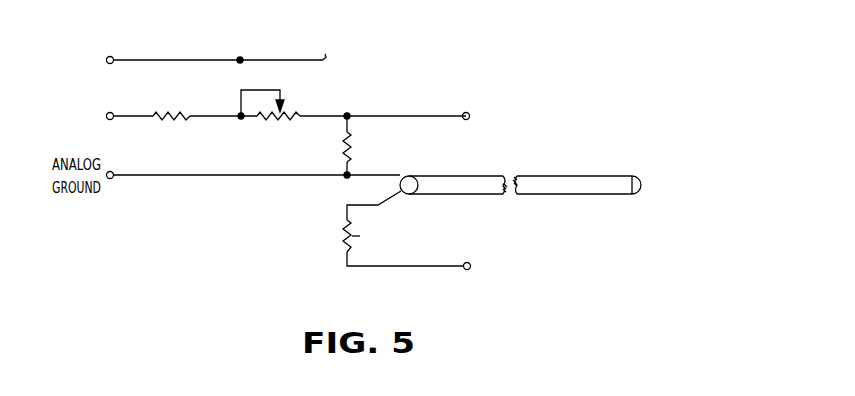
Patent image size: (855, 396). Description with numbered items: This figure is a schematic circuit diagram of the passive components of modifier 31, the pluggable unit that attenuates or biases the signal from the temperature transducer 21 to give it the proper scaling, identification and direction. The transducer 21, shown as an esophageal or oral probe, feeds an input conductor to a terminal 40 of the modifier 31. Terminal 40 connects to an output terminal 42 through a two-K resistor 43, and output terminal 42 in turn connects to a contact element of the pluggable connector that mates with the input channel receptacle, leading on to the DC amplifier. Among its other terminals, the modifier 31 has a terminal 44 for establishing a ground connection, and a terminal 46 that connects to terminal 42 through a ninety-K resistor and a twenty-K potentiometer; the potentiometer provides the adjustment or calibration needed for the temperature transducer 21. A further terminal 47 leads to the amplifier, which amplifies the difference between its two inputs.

The terminal 44 is at (112, 57).
The terminal 46 is at (112, 113).
The modifier 31 is at (364, 116).
The output terminal 42 is at (466, 112).
The 2K resistor 43 is at (342, 149).
The terminal 40 is at (408, 177).
The temperature transducer 21 is at (557, 196).
The terminal 47 is at (468, 263).